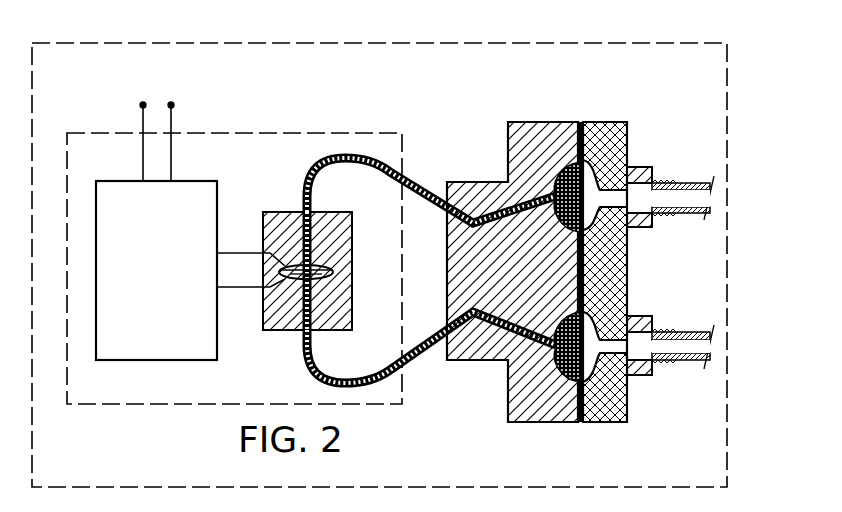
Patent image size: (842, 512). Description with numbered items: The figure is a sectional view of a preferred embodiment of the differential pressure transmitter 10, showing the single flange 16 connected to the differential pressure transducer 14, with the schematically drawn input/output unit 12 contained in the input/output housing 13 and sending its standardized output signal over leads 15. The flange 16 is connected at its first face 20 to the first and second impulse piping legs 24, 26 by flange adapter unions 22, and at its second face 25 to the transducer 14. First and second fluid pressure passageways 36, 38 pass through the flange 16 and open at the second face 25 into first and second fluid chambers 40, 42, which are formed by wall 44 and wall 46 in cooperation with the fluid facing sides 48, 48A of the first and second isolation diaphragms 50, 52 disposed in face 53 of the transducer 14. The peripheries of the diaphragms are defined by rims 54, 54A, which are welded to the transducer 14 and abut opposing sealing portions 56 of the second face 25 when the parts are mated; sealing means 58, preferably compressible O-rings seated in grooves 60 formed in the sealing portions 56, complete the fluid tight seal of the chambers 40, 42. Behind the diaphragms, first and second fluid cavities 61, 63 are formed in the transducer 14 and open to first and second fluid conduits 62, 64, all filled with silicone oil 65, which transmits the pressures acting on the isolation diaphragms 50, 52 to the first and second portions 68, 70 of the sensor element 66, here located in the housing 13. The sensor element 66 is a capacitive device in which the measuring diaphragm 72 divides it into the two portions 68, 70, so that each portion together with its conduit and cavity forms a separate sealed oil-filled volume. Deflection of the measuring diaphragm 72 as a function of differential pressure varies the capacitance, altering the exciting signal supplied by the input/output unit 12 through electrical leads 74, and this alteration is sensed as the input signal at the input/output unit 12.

The differential pressure transmitter 10 is at (397, 41).
The input/output unit 12 is at (183, 345).
The input/output housing 13 is at (260, 133).
The differential pressure transducer 14 is at (512, 124).
The leads 15 is at (143, 105).
The single flange 16 is at (581, 140).
The first face 20 is at (628, 264).
The flange adapter unions 22 is at (654, 178).
The first impulse piping leg 24 is at (708, 197).
The second face 25 is at (578, 268).
The second impulse piping leg 26 is at (708, 346).
The first fluid pressure passageway 36 is at (602, 226).
The second fluid pressure passageway 38 is at (603, 372).
The first fluid chamber 40 is at (618, 262).
The second fluid chamber 42 is at (650, 322).
The wall 44 is at (630, 165).
The wall 46 is at (632, 415).
The fluid facing side 48 is at (645, 167).
The fluid facing side 48A is at (642, 372).
The first isolation diaphragm 50 is at (603, 278).
The second isolation diaphragm 52 is at (604, 304).
The face 53 is at (581, 128).
The rim 54 is at (566, 178).
The rim 54A is at (576, 412).
The sealing portions 56 is at (630, 150).
The sealing means 58 is at (600, 130).
The grooves 60 is at (625, 126).
The first fluid cavity 61 is at (560, 178).
The first fluid conduit 62 is at (495, 195).
The second fluid cavity 63 is at (525, 395).
The second fluid conduit 64 is at (495, 340).
The silicone oil 65 is at (458, 186).
The sensor element 66 is at (283, 328).
The first portion 68 is at (292, 262).
The second portion 70 is at (318, 300).
The measuring diaphragm 72 is at (330, 275).
The electrical leads 74 is at (250, 287).